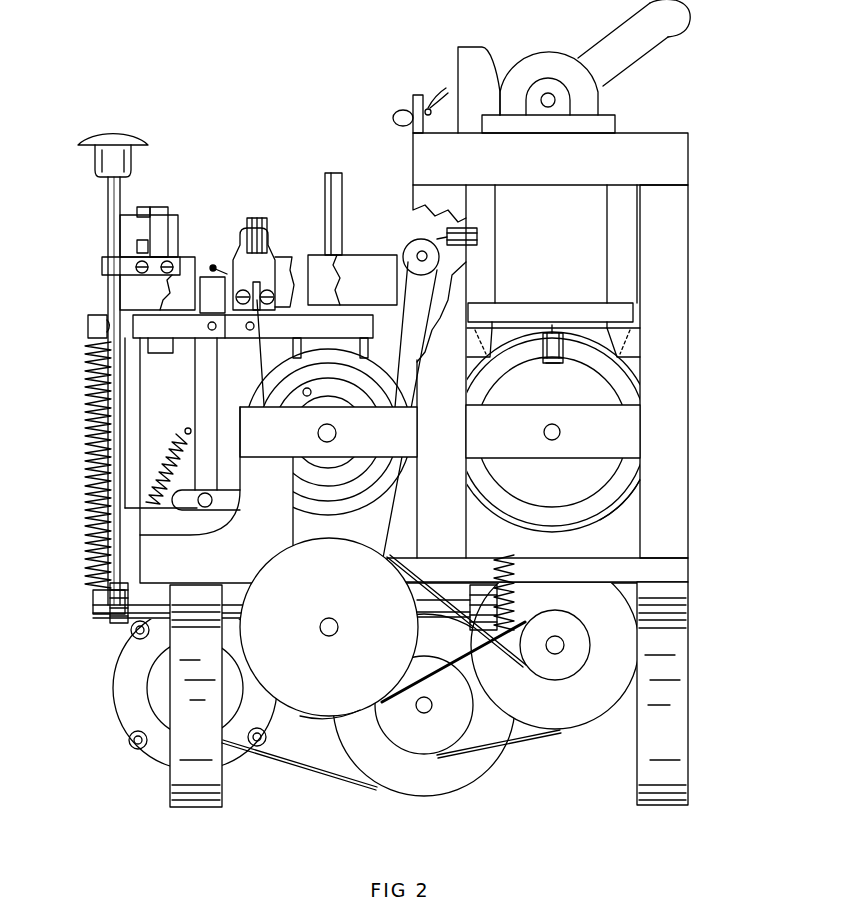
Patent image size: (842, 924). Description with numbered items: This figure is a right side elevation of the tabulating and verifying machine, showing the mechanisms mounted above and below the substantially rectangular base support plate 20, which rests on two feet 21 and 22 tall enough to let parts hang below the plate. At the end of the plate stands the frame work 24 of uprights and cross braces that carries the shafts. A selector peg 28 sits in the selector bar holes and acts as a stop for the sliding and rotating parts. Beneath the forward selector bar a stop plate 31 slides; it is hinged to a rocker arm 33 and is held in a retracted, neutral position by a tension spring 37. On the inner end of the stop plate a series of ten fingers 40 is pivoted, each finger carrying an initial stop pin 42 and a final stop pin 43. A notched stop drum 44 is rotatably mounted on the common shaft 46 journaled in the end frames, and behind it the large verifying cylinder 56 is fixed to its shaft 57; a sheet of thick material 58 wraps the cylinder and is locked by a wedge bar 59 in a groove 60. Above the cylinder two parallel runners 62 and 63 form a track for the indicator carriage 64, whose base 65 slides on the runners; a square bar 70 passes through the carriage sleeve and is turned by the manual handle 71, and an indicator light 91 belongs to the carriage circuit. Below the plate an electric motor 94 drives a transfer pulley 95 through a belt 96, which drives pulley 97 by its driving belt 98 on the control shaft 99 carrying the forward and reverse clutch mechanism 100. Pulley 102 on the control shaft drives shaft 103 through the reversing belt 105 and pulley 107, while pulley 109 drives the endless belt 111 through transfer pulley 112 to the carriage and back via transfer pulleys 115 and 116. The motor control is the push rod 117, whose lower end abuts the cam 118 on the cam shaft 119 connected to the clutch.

The base support plate 20 is at (690, 566).
The foot 21 is at (680, 748).
The foot 22 is at (170, 795).
The frame work 24 is at (672, 353).
The selector peg 28 is at (166, 212).
The stop plate 31 is at (88, 328).
The rocker arm 33 is at (196, 372).
The tension spring 37 is at (183, 455).
The fingers 40 is at (256, 337).
The initial stop pin 42 is at (360, 342).
The final stop pin 43 is at (296, 340).
The stop drum 44 is at (345, 515).
The common shaft 46 is at (336, 433).
The verifying cylinder 56 is at (640, 489).
The shaft 57 is at (560, 432).
The sheet of thick material 58 is at (636, 378).
The wedge bar 59 is at (547, 363).
The groove 60 is at (561, 362).
The runner 62 is at (474, 340).
The runner 63 is at (628, 334).
The indicator carriage 64 is at (590, 96).
The base 65 is at (564, 305).
The square bar 70 is at (546, 108).
The handle 71 is at (690, 18).
The indicator light 91 is at (394, 120).
The electric motor 94 is at (122, 717).
The transfer pulley 95 is at (460, 788).
The belt 96 is at (313, 784).
The pulley 97 is at (588, 722).
The driving belt 98 is at (525, 738).
The control shaft 99 is at (560, 640).
The forward and reverse clutch mechanism 100 is at (525, 620).
The pulley 102 is at (585, 655).
The shaft 103 is at (338, 628).
The reversing belt 105 is at (486, 642).
The pulley 107 is at (321, 712).
The pulley 109 is at (380, 473).
The endless belt 111 is at (258, 380).
The transfer pulley 112 is at (262, 224).
The transfer pulley 115 is at (412, 248).
The transfer pulley 116 is at (478, 237).
The push rod 117 is at (107, 222).
The cam 118 is at (118, 626).
The cam shaft 119 is at (95, 612).